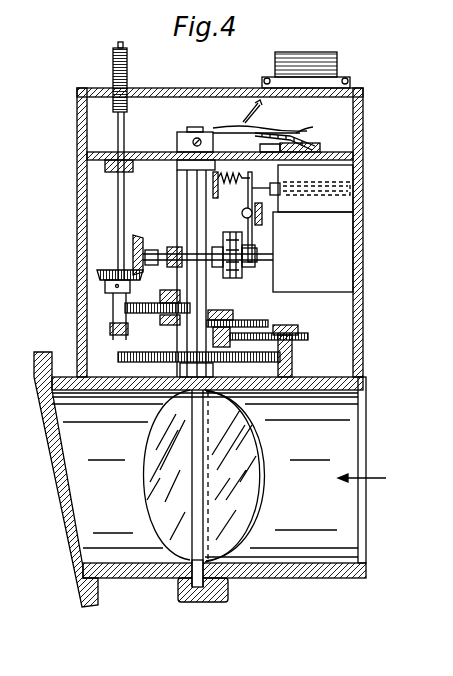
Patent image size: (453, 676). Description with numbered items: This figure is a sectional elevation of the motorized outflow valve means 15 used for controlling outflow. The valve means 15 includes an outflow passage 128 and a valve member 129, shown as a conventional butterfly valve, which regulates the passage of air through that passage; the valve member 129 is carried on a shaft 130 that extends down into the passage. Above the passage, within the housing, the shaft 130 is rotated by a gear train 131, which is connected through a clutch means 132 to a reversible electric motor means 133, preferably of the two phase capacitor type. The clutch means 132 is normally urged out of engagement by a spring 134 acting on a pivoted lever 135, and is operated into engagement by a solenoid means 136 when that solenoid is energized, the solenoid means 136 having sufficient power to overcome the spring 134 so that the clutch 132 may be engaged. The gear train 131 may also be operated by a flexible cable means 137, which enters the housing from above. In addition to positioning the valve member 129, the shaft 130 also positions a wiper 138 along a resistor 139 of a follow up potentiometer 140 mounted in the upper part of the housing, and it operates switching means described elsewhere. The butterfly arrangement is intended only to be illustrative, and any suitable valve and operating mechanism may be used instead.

The outflow valve means 15 is at (364, 346).
The outflow passage 128 is at (345, 437).
The valve member 129 is at (243, 503).
The shaft 130 is at (196, 532).
The gear train 131 is at (242, 316).
The clutch means 132 is at (230, 280).
The reversible electric motor means 133 is at (337, 277).
The spring 134 is at (240, 180).
The pivoted lever 135 is at (245, 210).
The solenoid means 136 is at (338, 174).
The flexible cable means 137 is at (125, 72).
The wiper 138 is at (253, 132).
The resistor 139 is at (313, 137).
The follow up potentiometer 140 is at (297, 120).